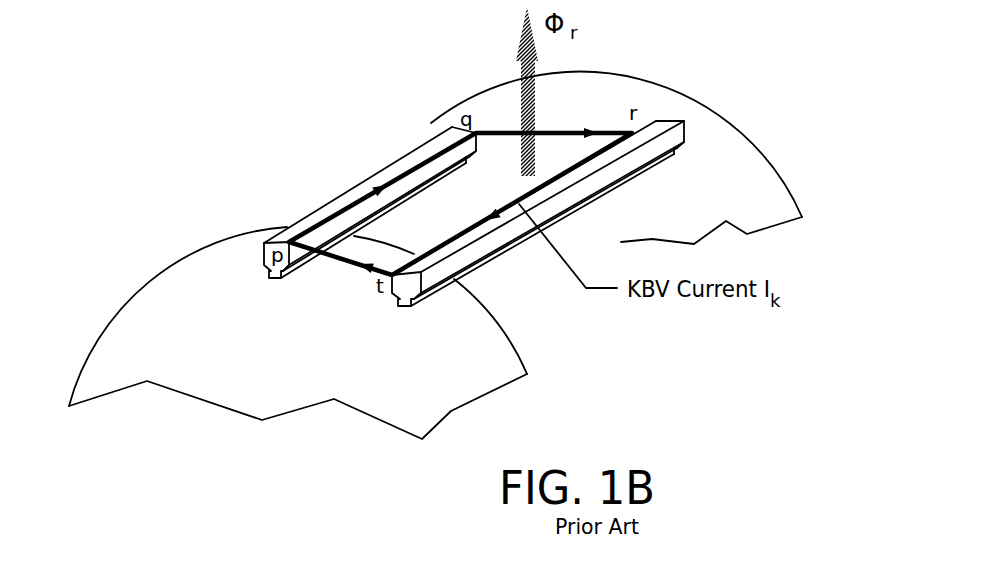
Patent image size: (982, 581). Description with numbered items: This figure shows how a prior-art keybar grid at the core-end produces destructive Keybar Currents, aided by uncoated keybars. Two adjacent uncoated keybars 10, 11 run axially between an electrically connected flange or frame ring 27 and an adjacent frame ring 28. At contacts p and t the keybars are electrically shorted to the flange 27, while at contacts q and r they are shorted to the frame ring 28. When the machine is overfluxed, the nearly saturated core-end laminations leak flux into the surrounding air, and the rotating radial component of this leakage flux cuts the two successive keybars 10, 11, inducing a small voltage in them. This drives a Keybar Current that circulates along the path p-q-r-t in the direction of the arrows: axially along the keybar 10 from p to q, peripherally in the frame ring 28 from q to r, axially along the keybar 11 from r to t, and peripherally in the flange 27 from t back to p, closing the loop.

The keybar 10 is at (417, 163).
The keybar 11 is at (620, 182).
The flange or frame ring 27 is at (510, 340).
The frame ring 28 is at (757, 145).